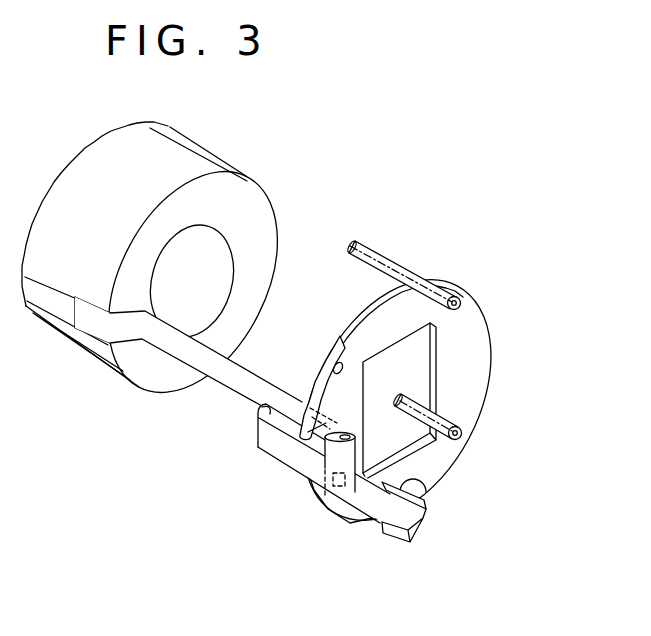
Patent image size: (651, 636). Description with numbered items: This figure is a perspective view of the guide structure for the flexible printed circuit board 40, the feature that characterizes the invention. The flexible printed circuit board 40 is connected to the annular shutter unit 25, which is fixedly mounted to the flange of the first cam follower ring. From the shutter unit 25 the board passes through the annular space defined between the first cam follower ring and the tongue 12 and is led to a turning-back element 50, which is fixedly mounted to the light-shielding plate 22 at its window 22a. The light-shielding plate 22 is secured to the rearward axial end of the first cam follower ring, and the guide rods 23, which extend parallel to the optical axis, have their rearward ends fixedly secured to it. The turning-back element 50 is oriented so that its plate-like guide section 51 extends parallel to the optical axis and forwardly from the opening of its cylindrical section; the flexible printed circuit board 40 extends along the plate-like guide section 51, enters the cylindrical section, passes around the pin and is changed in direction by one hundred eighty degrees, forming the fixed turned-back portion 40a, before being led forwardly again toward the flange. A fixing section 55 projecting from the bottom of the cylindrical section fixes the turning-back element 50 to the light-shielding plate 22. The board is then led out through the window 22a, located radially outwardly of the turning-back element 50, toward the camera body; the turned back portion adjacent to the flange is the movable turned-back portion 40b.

The tongue 12 is at (428, 497).
The light-shielding plate 22 is at (465, 334).
The window 22a is at (323, 438).
The guide rods 23 is at (381, 252).
The shutter unit 25 is at (198, 151).
The flexible printed circuit board 40 is at (220, 384).
The fixed turned-back portion 40a is at (331, 367).
The movable turned-back portion 40b is at (257, 430).
The turning-back element 50 is at (356, 450).
The plate-like guide section 51 is at (298, 401).
The fixing section 55 is at (348, 503).